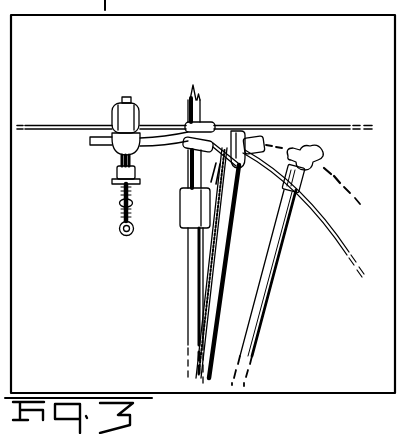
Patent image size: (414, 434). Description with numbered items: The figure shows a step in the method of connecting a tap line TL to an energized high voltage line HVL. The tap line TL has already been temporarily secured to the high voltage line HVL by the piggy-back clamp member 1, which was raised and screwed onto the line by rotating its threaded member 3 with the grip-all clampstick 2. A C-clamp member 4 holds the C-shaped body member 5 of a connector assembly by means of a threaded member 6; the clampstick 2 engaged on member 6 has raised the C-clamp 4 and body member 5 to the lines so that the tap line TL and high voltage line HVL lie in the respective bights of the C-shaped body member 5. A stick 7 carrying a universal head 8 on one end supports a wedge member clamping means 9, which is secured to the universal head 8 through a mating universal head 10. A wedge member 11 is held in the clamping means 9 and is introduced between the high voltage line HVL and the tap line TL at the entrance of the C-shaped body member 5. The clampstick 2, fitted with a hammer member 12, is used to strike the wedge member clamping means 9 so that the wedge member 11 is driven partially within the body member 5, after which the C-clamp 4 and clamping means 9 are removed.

The piggy-back clamp member 1 is at (133, 101).
The grip-all clampstick 2 is at (187, 290).
The threaded member 3 is at (121, 211).
The C-clamp member 4 is at (180, 192).
The C-shaped body member 5 is at (212, 122).
The threaded member 6 is at (188, 163).
The stick 7 is at (219, 285).
The universal head 8 is at (238, 198).
The wedge member clamping means 9 is at (250, 137).
The mating universal head 10 is at (242, 131).
The wedge member 11 is at (215, 173).
The hammer member 12 is at (325, 152).
The high voltage line HVL is at (296, 127).
The tap line TL is at (318, 230).